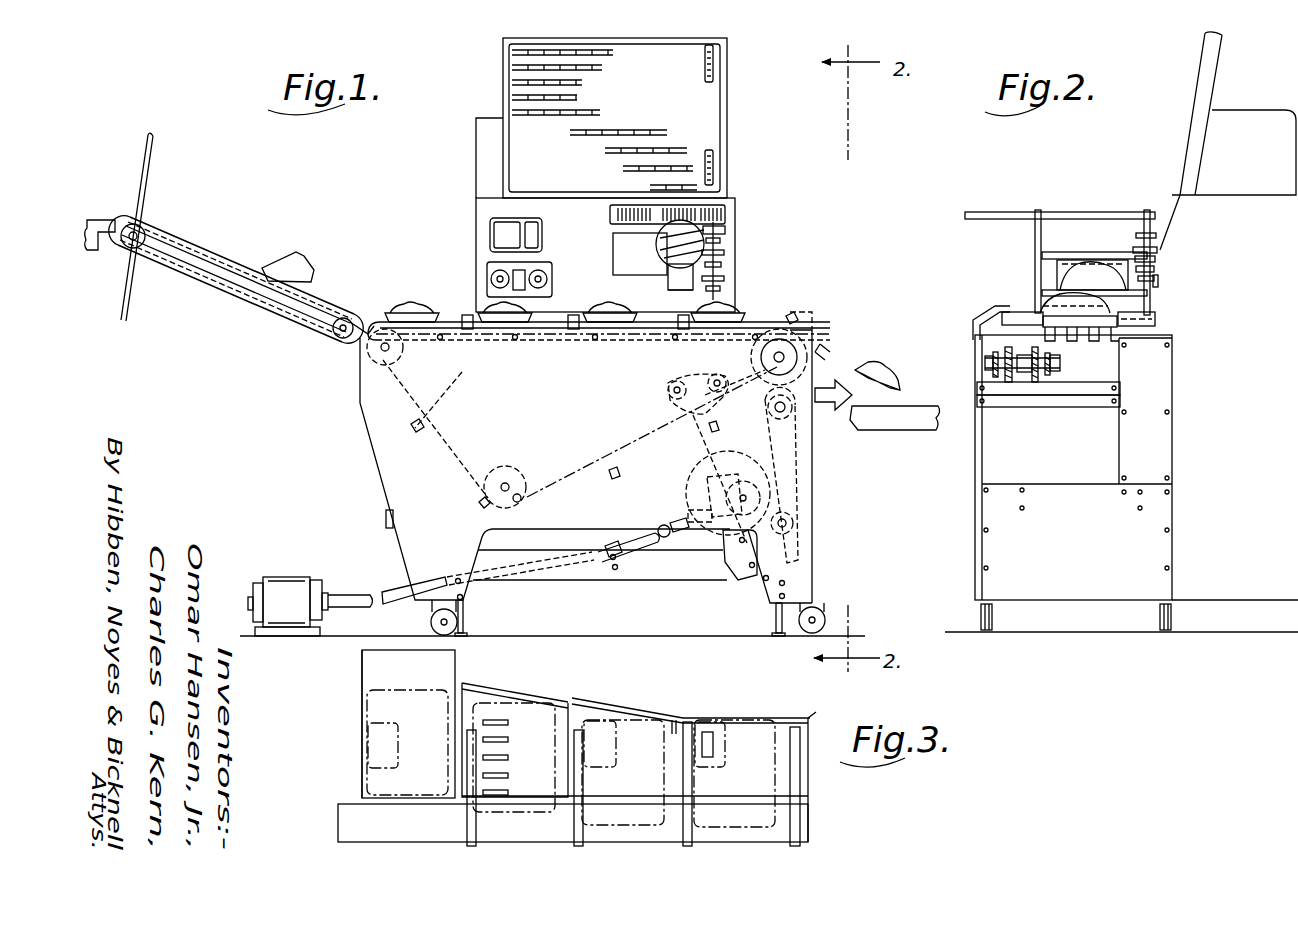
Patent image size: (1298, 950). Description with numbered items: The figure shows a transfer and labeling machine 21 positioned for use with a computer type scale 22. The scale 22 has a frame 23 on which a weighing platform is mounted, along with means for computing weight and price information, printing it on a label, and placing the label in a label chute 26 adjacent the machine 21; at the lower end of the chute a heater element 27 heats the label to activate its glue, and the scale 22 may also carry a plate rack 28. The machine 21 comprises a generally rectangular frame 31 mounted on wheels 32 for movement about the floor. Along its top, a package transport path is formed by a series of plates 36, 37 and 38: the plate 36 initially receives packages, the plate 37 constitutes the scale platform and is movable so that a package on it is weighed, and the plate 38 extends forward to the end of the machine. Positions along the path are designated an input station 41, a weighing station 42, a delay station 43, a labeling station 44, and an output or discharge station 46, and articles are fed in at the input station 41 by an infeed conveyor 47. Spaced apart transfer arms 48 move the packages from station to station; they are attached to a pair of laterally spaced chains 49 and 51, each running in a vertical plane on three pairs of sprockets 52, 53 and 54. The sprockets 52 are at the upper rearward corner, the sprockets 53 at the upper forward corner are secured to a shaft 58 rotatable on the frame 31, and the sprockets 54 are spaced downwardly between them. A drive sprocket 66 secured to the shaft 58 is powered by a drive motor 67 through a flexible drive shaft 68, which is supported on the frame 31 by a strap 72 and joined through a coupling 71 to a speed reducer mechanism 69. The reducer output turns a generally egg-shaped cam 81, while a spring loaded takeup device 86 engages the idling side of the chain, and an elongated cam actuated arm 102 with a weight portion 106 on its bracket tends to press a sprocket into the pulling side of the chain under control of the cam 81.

In FIG. 1, the transfer and labeling machine 21 is at (345, 441).
In FIG. 2, the transfer and labeling machine 21 is at (965, 546).
In FIG. 3, the transfer and labeling machine 21 is at (350, 751).
In FIG. 1, the computer type scale 22 is at (452, 186).
In FIG. 2, the computer type scale 22 is at (1160, 147).
In FIG. 1, the frame 23 is at (735, 202).
In FIG. 2, the frame 23 is at (1262, 122).
In FIG. 1, the label chute 26 is at (668, 280).
In FIG. 2, the label chute 26 is at (1163, 292).
In FIG. 1, the heater element 27 is at (680, 292).
In FIG. 1, the plate rack 28 is at (659, 98).
In FIG. 2, the plate rack 28 is at (1200, 86).
In FIG. 1, the frame 31 is at (393, 476).
In FIG. 2, the frame 31 is at (975, 466).
In FIG. 3, the frame 31 is at (350, 818).
In FIG. 1, the wheels 32 is at (466, 622).
In FIG. 2, the wheels 32 is at (1160, 622).
In FIG. 3, the plate 36 is at (378, 673).
In FIG. 3, the plate 37 is at (564, 710).
In FIG. 3, the plate 38 is at (672, 728).
In FIG. 1, the input station 41 is at (418, 298).
In FIG. 3, the input station 41 is at (354, 659).
In FIG. 1, the weighing station 42 is at (553, 308).
In FIG. 3, the weighing station 42 is at (534, 690).
In FIG. 1, the delay station 43 is at (613, 300).
In FIG. 3, the delay station 43 is at (638, 732).
In FIG. 1, the labeling station 44 is at (746, 300).
In FIG. 3, the labeling station 44 is at (752, 730).
In FIG. 1, the output or discharge station 46 is at (838, 285).
In FIG. 3, the output or discharge station 46 is at (836, 705).
In FIG. 1, the infeed conveyor 47 is at (250, 306).
In FIG. 2, the infeed conveyor 47 is at (1033, 238).
In FIG. 1, the transfer arms 48 is at (800, 326).
In FIG. 2, the transfer arms 48 is at (1018, 305).
In FIG. 3, the transfer arms 48 is at (466, 827).
In FIG. 1, the chain 49 is at (586, 468).
In FIG. 2, the chain 49 is at (1006, 386).
In FIG. 2, the chain 51 is at (1042, 382).
In FIG. 1, the sprockets 52 is at (399, 360).
In FIG. 1, the sprockets 53 is at (752, 354).
In FIG. 2, the sprockets 53 is at (1024, 384).
In FIG. 1, the sprockets 54 is at (506, 464).
In FIG. 2, the shaft 58 is at (1006, 356).
In FIG. 1, the drive sprocket 66 is at (877, 387).
In FIG. 2, the drive sprocket 66 is at (990, 374).
In FIG. 1, the drive motor 67 is at (300, 574).
In FIG. 1, the flexible drive shaft 68 is at (352, 604).
In FIG. 1, the speed reducer mechanism 69 is at (690, 478).
In FIG. 1, the coupling 71 is at (668, 546).
In FIG. 1, the strap 72 is at (614, 546).
In FIG. 1, the cam 81 is at (684, 500).
In FIG. 1, the spring loaded takeup device 86 is at (694, 405).
In FIG. 1, the cam actuated arm 102 is at (802, 470).
In FIG. 1, the weight portion 106 is at (736, 552).